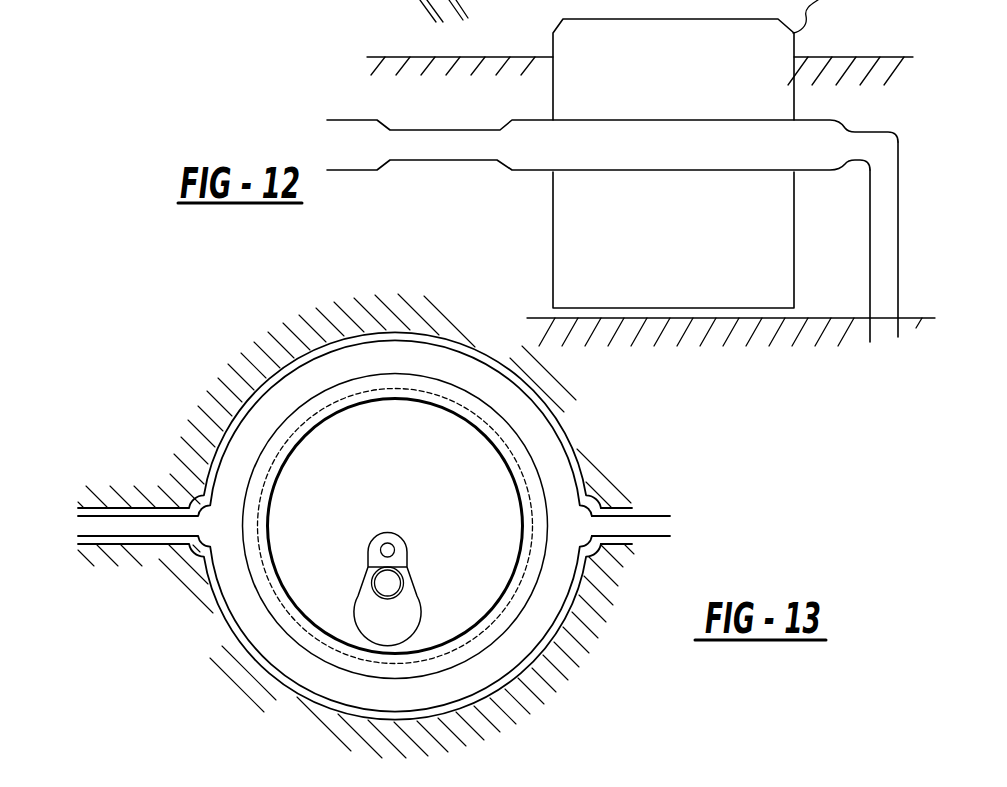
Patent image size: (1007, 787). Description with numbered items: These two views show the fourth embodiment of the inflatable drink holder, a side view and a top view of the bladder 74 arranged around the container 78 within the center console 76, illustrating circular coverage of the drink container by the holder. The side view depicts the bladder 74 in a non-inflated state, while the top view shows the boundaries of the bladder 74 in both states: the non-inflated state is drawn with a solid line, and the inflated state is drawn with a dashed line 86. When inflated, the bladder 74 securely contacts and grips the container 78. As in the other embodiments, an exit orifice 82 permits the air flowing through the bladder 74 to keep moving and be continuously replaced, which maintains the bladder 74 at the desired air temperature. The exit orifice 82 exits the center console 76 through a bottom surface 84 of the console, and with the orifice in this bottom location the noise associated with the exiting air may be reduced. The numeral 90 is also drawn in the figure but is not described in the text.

In FIG. 12, the bladder 74 is at (573, 158).
In FIG. 13, the bladder 74 is at (232, 540).
In FIG. 12, the center console 76 is at (394, 57).
In FIG. 13, the container 78 is at (402, 452).
In FIG. 12, the exit orifice 82 is at (437, 23).
In FIG. 13, the exit orifice 82 is at (655, 516).
In FIG. 12, the bottom surface 84 is at (834, 318).
In FIG. 13, the dashed line 86 is at (523, 588).
In FIG. 12, the upper fitting 90 is at (370, 0).